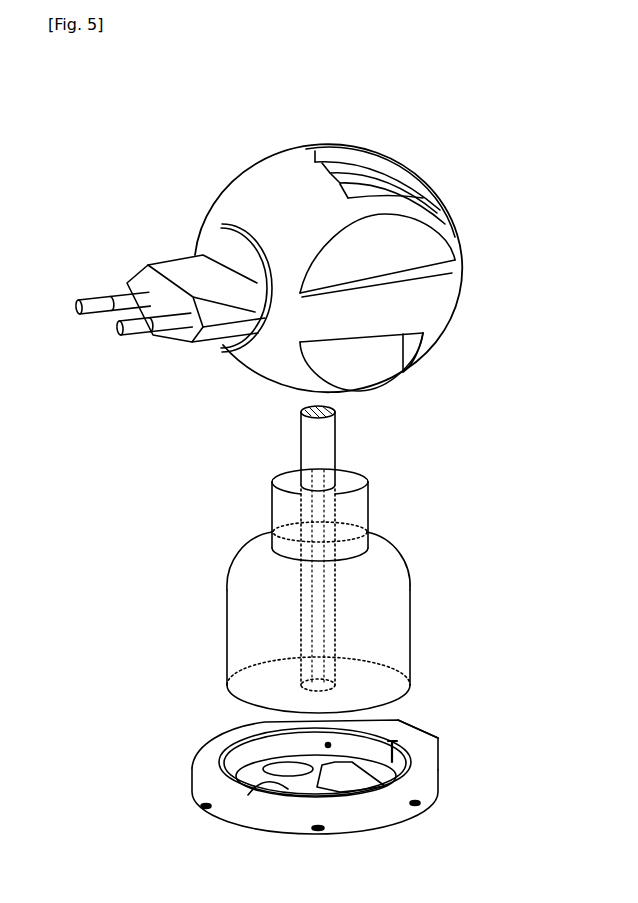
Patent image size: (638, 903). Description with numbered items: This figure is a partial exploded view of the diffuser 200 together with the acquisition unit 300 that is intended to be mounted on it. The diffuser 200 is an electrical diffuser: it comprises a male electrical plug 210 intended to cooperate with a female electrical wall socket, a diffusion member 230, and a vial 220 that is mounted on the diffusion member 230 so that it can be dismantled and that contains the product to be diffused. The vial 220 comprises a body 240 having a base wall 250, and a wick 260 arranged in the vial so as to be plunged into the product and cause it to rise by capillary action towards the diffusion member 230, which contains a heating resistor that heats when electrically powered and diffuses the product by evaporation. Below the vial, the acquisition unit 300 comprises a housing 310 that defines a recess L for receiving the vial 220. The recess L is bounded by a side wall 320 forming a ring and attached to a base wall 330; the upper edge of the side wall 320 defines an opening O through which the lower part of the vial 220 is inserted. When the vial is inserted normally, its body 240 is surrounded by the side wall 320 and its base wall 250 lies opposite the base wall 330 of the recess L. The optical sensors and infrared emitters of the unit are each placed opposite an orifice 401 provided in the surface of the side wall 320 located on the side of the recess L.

The diffuser 200 is at (460, 161).
The male electrical plug 210 is at (92, 310).
The vial 220 is at (206, 568).
The diffusion member 230 is at (242, 198).
The body 240 is at (227, 617).
The base wall 250 is at (367, 683).
The wick 260 is at (302, 455).
The acquisition unit 300 is at (152, 810).
The housing 310 is at (377, 813).
The side wall 320 is at (425, 728).
The base wall 330 is at (358, 780).
The orifice 401 is at (328, 745).
The opening O is at (248, 792).
The recess L is at (300, 790).